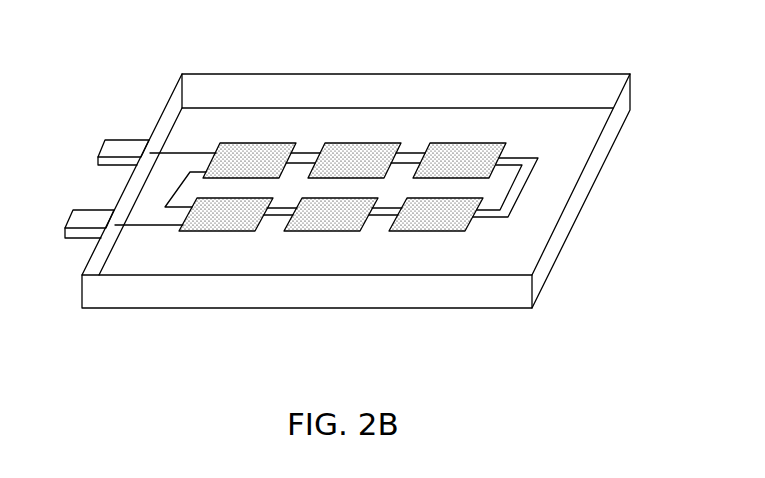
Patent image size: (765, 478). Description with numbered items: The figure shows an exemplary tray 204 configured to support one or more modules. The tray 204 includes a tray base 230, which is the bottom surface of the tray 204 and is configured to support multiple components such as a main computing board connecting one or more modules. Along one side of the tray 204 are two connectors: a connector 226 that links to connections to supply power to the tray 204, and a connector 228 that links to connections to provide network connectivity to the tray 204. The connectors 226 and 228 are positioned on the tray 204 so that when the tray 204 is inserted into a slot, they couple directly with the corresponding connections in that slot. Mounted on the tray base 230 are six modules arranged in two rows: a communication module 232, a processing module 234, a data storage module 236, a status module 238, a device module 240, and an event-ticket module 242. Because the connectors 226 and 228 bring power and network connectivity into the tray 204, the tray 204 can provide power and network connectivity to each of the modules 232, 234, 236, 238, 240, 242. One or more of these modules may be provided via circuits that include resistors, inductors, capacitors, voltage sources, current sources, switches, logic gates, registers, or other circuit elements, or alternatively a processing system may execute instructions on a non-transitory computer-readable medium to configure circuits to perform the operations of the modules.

The tray 204 is at (588, 75).
The tray base 230 is at (563, 180).
The connector 226 is at (125, 140).
The connector 228 is at (98, 210).
The communication module 232 is at (223, 143).
The processing module 234 is at (330, 143).
The data storage module 236 is at (445, 143).
The status module 238 is at (183, 232).
The device module 240 is at (293, 232).
The event-ticket module 242 is at (400, 232).